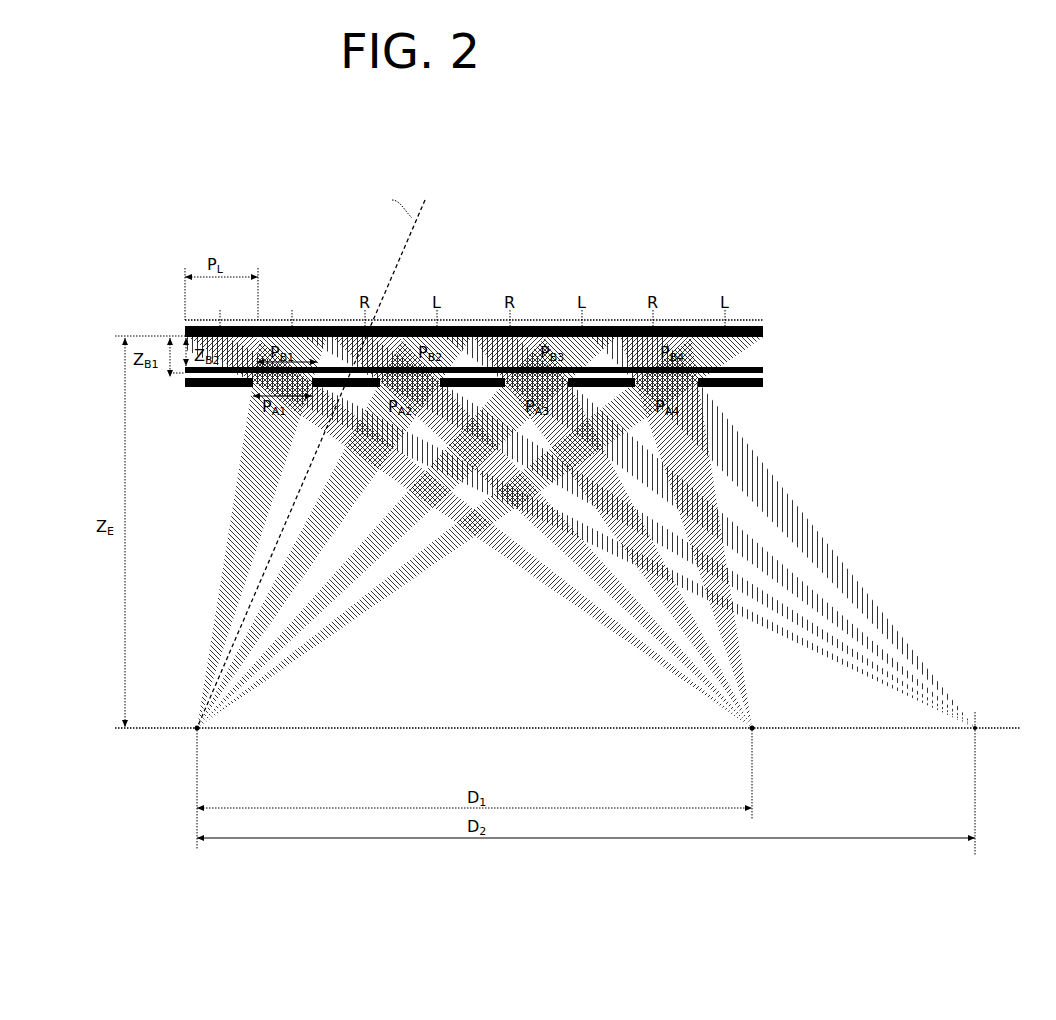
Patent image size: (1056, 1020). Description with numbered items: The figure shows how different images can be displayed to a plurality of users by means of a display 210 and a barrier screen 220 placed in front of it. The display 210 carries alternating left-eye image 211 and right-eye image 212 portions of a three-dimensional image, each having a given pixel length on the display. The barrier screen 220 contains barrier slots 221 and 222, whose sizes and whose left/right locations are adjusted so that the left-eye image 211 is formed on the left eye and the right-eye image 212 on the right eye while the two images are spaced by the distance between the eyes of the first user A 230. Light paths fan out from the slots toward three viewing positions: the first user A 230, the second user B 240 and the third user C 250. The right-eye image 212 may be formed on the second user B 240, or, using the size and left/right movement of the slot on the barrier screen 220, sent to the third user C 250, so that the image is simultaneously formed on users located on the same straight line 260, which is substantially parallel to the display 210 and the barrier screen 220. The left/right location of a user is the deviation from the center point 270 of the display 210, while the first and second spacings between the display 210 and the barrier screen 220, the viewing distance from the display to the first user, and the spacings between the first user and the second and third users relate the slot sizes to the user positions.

The display 210 is at (770, 320).
The left-eye image 211 is at (300, 300).
The right-eye image 212 is at (212, 300).
The barrier screen 220 is at (770, 368).
The barrier slot 221 is at (253, 390).
The barrier slot 222 is at (312, 389).
The first user A 230 is at (208, 772).
The second user B 240 is at (764, 772).
The third user C 250 is at (987, 772).
The straight line 260 is at (146, 730).
The center point 270 is at (427, 199).